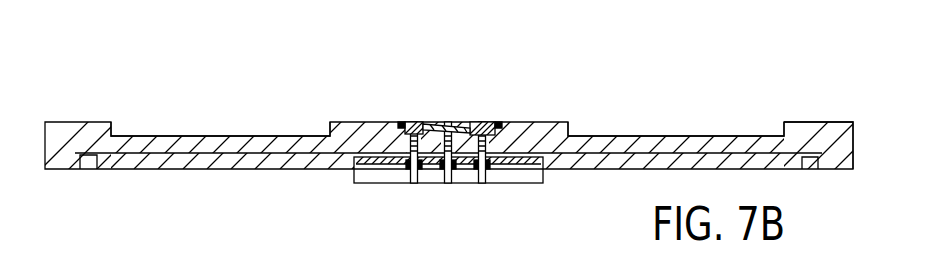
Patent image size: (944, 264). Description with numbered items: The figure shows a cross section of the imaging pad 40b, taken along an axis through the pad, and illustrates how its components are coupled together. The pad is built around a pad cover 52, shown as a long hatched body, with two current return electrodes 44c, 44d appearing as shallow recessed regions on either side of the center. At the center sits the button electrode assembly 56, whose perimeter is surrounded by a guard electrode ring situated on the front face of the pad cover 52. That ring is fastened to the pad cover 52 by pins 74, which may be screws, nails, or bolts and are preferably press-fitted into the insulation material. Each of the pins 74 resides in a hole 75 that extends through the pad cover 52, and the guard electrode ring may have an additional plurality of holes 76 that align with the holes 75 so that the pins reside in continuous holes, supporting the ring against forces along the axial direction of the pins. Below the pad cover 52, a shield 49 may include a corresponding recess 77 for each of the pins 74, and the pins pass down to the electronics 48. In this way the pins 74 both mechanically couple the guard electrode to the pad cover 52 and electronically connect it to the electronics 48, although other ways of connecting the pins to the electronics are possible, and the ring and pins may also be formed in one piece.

The imaging pad 40b is at (268, 63).
The current return electrode 44d is at (193, 122).
The current return electrode 44c is at (669, 122).
The pad cover 52 is at (821, 122).
The shield 49 is at (397, 183).
The electronics 48 is at (458, 183).
The recess 77 is at (413, 183).
The pins 74 is at (409, 122).
The button electrode assembly 56 is at (445, 122).
The holes 76 is at (406, 122).
The holes 75 is at (493, 122).